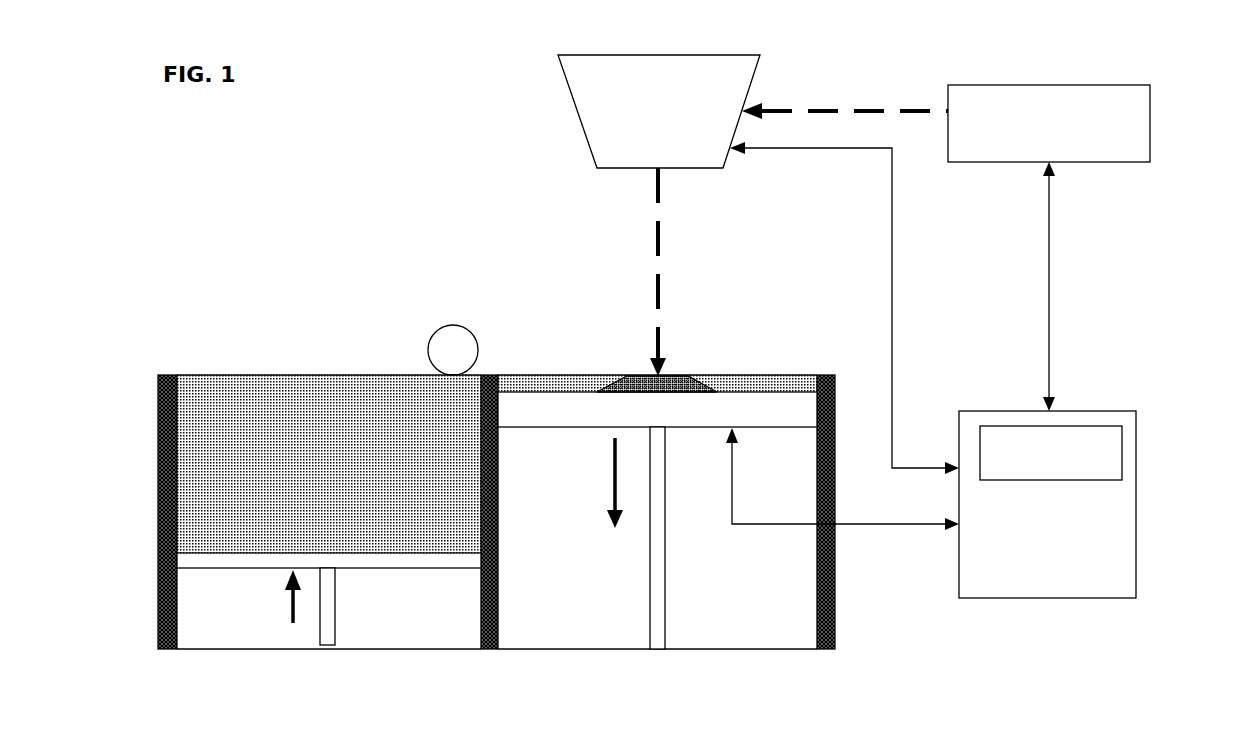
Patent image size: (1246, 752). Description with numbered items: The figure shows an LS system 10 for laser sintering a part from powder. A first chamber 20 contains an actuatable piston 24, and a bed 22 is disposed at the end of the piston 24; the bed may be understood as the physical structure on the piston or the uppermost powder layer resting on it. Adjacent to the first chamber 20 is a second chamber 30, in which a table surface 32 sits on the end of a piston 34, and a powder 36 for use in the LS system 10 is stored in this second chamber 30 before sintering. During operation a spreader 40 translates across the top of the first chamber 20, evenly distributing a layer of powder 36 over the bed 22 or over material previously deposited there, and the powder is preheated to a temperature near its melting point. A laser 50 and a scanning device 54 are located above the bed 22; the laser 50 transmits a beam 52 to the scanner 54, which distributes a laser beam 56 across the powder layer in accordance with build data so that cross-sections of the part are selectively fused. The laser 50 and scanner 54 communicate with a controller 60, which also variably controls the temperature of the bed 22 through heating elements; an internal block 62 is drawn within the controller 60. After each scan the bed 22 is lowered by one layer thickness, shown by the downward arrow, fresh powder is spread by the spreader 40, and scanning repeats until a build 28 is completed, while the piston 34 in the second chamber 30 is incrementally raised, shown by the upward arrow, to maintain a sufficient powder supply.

The LS system 10 is at (405, 105).
The first chamber 20 is at (572, 610).
The bed 22 is at (538, 410).
The actuatable piston 24 is at (665, 610).
The build 28 is at (627, 377).
The second chamber 30 is at (235, 625).
The table surface 32 is at (415, 562).
The piston 34 is at (337, 610).
The powder 36 is at (235, 387).
The spreader 40 is at (432, 330).
The laser 50 is at (1117, 85).
The beam 52 is at (813, 108).
The scanning device 54 is at (665, 55).
The laser beam 56 is at (660, 277).
The controller 60 is at (1095, 411).
The memory 62 is at (1097, 468).